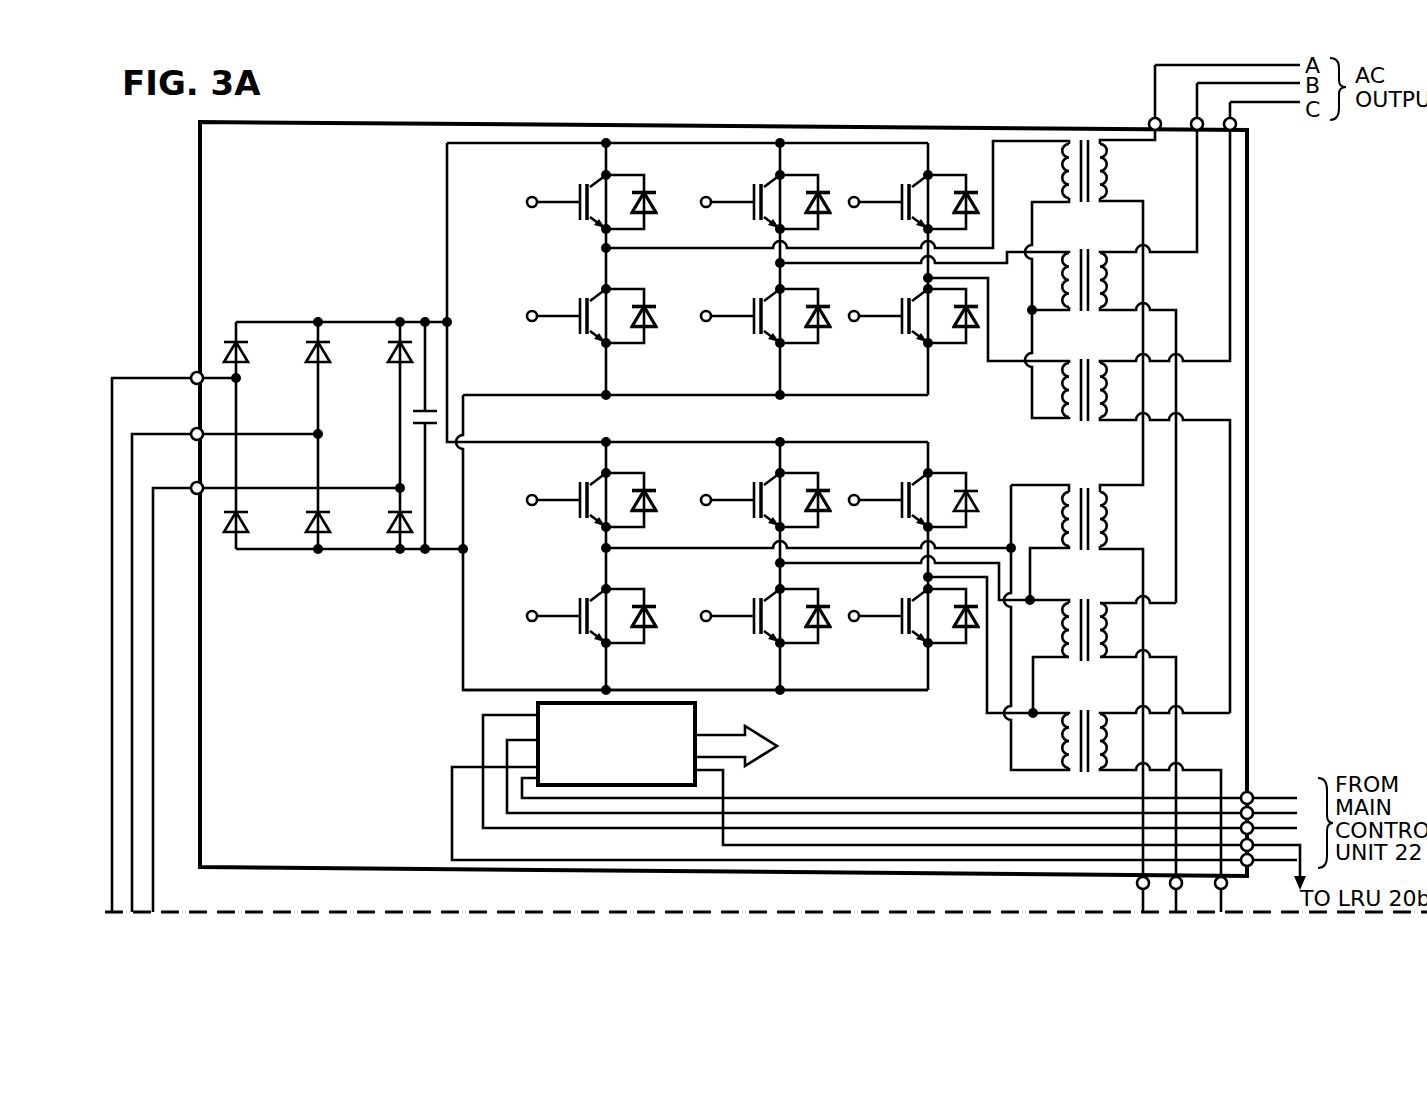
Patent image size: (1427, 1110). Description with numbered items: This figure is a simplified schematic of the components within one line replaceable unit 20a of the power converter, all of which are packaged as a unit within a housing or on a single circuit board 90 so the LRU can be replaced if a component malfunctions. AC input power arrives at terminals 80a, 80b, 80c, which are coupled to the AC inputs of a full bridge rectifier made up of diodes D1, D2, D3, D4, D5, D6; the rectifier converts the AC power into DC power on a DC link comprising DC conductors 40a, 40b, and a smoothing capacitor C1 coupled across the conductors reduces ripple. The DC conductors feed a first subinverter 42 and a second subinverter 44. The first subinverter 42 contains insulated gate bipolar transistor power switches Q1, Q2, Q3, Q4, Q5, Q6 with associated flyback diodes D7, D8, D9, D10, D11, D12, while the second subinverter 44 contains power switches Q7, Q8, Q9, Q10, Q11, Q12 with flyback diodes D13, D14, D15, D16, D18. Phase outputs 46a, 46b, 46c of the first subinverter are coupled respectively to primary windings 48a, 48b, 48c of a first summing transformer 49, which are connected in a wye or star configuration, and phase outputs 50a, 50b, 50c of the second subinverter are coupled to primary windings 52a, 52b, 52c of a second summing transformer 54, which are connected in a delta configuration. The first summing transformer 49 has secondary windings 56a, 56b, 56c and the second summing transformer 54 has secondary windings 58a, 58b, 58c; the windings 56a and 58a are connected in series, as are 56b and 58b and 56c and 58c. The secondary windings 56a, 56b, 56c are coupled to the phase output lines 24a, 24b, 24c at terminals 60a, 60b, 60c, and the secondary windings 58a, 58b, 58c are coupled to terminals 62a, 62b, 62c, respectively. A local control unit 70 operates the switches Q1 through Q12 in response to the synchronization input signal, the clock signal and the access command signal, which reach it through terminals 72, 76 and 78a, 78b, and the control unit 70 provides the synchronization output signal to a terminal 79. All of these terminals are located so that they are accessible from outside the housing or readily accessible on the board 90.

The line replaceable unit 20a is at (360, 130).
The housing or single circuit board 90 is at (210, 172).
The first subinverter 42 is at (688, 128).
The second subinverter 44 is at (845, 699).
The DC conductor 40a is at (383, 292).
The DC conductor 40b is at (362, 549).
The terminal 80a is at (193, 372).
The terminal 80b is at (192, 430).
The terminal 80c is at (193, 483).
The diode D1 is at (247, 358).
The diode D2 is at (236, 535).
The diode D3 is at (314, 362).
The diode D4 is at (310, 513).
The diode D5 is at (398, 360).
The diode D6 is at (392, 513).
The smoothing capacitor C1 is at (415, 410).
The power switch Q1 is at (595, 188).
The power switch Q2 is at (595, 300).
The power switch Q3 is at (770, 186).
The power switch Q4 is at (768, 345).
The power switch Q5 is at (920, 185).
The power switch Q6 is at (905, 340).
The power switch Q7 is at (595, 490).
The power switch Q8 is at (590, 632).
The power switch Q9 is at (768, 485).
The power switch Q10 is at (762, 634).
The power switch Q11 is at (918, 485).
The power switch Q12 is at (912, 638).
The flyback diode D7 is at (654, 194).
The flyback diode D8 is at (645, 342).
The flyback diode D9 is at (836, 192).
The flyback diode D10 is at (820, 330).
The flyback diode D11 is at (972, 192).
The flyback diode D12 is at (974, 342).
The flyback diode D13 is at (650, 512).
The flyback diode D14 is at (647, 634).
The flyback diode D15 is at (820, 512).
The flyback diode D16 is at (830, 638).
The flyback diode D18 is at (975, 638).
The phase output 46a is at (600, 248).
The phase output 46b is at (775, 264).
The phase output 46c is at (922, 279).
The phase output 50a is at (600, 548).
The phase output 50b is at (775, 564).
The phase output 50c is at (922, 578).
The first summing transformer 49 is at (992, 148).
The second summing transformer 54 is at (1003, 723).
The primary winding 48a is at (1070, 174).
The primary winding 48b is at (1066, 282).
The primary winding 48c is at (1068, 388).
The secondary winding 56a is at (1106, 170).
The secondary winding 56b is at (1105, 270).
The secondary winding 56c is at (1106, 390).
The primary winding 52a is at (1069, 512).
The primary winding 52b is at (1066, 633).
The primary winding 52c is at (1068, 745).
The secondary winding 58a is at (1100, 512).
The secondary winding 58b is at (1105, 632).
The secondary winding 58c is at (1100, 747).
The terminal 60a is at (1150, 124).
The terminal 60b is at (1193, 120).
The terminal 60c is at (1244, 127).
The output line 24a is at (1152, 65).
The output line 24b is at (1195, 84).
The output line 24c is at (1293, 103).
The terminal 62a is at (1137, 883).
The terminal 62b is at (1171, 889).
The terminal 62c is at (1224, 889).
The local control unit 70 is at (696, 717).
The terminal 72 is at (1247, 807).
The terminal 78a is at (1249, 822).
The terminal 78b is at (1245, 794).
The terminal 79 is at (1249, 840).
The terminal 76 is at (1249, 866).